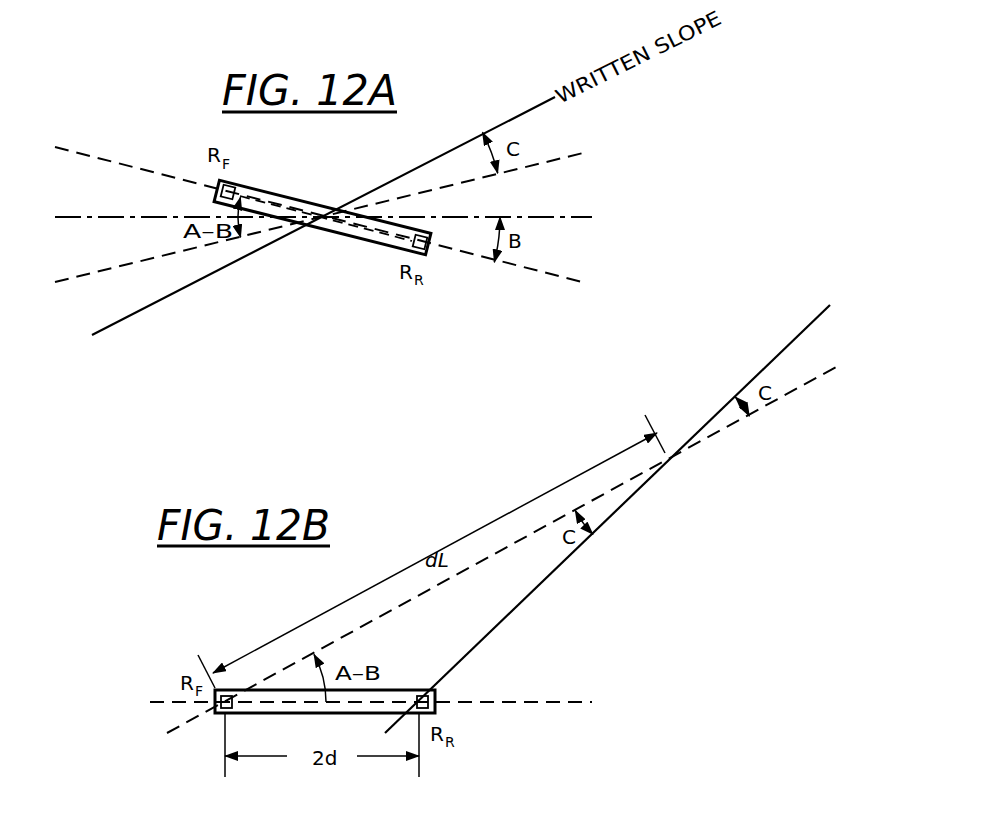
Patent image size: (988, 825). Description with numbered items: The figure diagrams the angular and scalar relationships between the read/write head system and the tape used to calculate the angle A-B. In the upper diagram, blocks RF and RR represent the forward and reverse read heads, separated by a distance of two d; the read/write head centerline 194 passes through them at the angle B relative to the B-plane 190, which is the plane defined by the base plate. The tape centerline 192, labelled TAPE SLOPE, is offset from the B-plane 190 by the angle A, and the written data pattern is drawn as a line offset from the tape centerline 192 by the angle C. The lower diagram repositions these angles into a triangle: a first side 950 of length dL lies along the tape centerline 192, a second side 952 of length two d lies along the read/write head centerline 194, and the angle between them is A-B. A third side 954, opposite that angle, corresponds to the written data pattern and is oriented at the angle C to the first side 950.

In FIG. 12A, the B-plane 190 is at (572, 218).
In FIG. 12A, the tape centerline 192 is at (563, 158).
In FIG. 12B, the tape centerline 192 is at (816, 375).
In FIG. 12A, the read/write head centerline 194 is at (541, 273).
In FIG. 12B, the read/write head centerline 194 is at (567, 703).
In FIG. 12B, the first side 950 is at (290, 662).
In FIG. 12B, the second side 952 is at (237, 713).
In FIG. 12B, the third side 954 is at (566, 561).